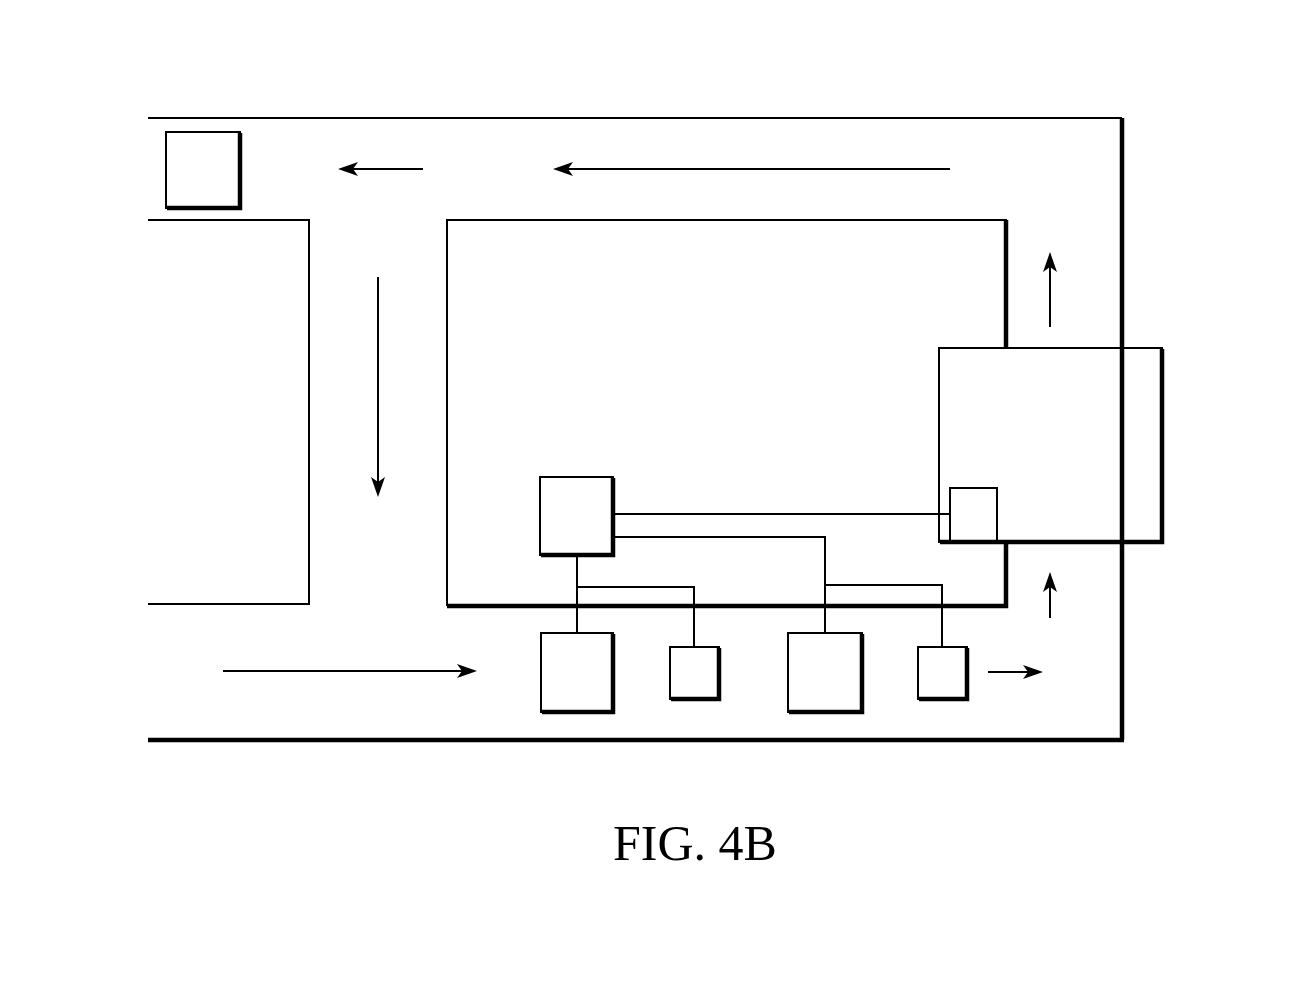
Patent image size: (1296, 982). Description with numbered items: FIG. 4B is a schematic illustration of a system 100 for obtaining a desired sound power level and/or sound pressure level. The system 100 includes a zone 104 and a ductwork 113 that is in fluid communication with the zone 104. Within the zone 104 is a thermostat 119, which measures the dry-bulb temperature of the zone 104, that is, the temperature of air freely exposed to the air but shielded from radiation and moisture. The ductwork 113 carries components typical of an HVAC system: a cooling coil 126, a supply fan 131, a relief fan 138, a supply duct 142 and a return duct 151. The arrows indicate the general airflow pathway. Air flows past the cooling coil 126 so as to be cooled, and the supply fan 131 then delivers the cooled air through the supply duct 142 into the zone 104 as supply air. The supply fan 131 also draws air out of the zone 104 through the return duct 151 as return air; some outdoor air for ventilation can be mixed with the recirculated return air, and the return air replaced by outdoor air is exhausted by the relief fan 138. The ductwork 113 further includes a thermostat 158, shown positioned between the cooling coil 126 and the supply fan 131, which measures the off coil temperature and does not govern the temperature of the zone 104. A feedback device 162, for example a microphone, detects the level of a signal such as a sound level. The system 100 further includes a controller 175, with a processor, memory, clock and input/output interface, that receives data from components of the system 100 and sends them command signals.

The system 100 is at (1214, 74).
The ductwork 113 is at (1018, 116).
The return duct 151 is at (1108, 233).
The supply duct 142 is at (1108, 658).
The relief fan 138 is at (204, 150).
The zone 104 is at (1152, 443).
The thermostat 119 is at (970, 495).
The controller 175 is at (576, 482).
The cooling coil 126 is at (577, 688).
The thermostat 158 is at (691, 676).
The supply fan 131 is at (824, 688).
The feedback device 162 is at (938, 676).